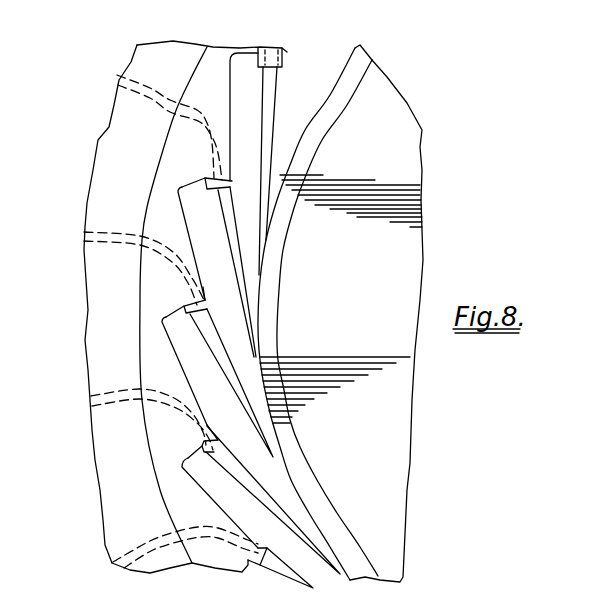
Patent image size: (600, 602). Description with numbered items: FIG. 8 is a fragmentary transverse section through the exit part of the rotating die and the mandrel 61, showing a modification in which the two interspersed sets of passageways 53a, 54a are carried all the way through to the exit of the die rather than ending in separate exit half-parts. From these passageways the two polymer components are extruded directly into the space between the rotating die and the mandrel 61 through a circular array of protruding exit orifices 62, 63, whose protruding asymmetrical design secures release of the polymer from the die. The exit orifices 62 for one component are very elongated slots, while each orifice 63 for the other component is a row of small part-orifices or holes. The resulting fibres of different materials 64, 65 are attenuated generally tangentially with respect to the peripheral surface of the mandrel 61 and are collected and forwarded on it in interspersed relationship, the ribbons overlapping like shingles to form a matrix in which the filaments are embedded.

The passageways for one component 53a is at (117, 77).
The passageways for the other component 54a is at (86, 234).
The mandrel 61 is at (350, 66).
The exit orifices 62 is at (250, 158).
The exit orifices 63 is at (203, 288).
The fibres of one material 64 is at (224, 213).
The fibres of the other material 65 is at (218, 350).